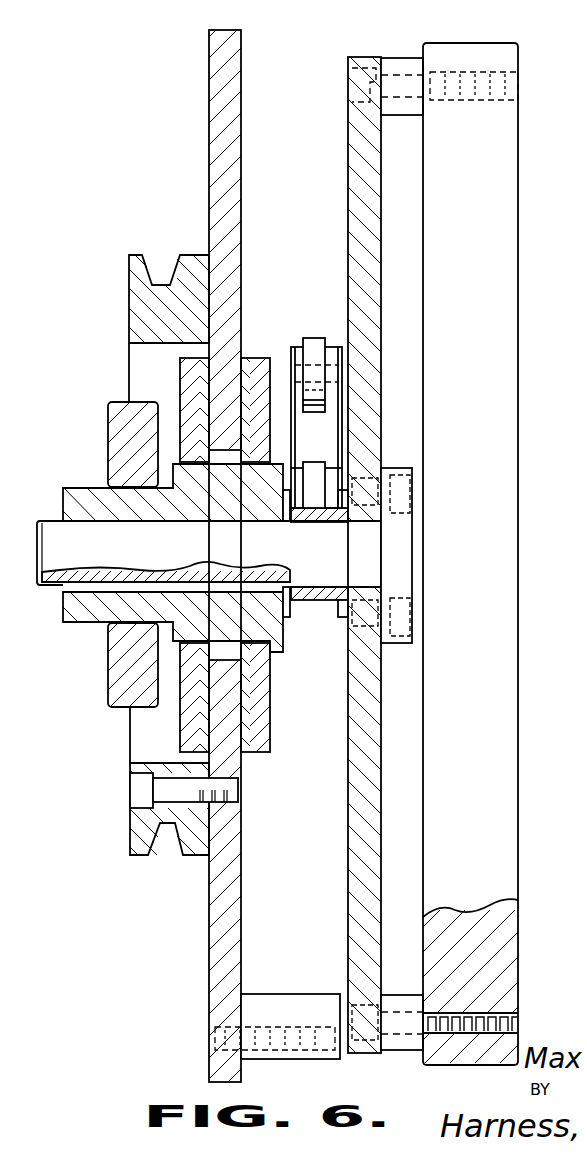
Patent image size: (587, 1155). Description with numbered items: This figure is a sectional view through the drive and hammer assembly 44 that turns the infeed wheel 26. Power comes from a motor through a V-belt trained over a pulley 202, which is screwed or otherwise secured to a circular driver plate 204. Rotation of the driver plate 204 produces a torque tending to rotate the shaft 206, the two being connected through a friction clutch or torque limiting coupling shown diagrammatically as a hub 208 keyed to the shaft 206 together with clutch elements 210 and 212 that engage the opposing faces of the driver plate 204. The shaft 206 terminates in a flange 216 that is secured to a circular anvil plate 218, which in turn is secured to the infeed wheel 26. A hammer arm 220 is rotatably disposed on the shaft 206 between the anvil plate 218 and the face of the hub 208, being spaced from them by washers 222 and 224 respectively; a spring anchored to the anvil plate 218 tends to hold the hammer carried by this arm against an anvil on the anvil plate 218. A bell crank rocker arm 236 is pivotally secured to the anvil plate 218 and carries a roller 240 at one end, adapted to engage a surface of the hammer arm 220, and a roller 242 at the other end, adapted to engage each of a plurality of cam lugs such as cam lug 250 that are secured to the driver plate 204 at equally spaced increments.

The drive assembly 44 is at (112, 51).
The infeed wheel 26 is at (490, 880).
The pulley 202 is at (130, 293).
The driver plate 204 is at (209, 127).
The shaft 206 is at (48, 530).
The hub 208 is at (90, 610).
The clutch element 210 is at (183, 376).
The clutch element 212 is at (263, 358).
The flange 216 is at (403, 548).
The anvil plate 218 is at (370, 335).
The hammer arm 220 is at (318, 547).
The washer 222 is at (351, 522).
The washer 224 is at (297, 618).
The bell crank rocker arm 236 is at (330, 432).
The roller 240 is at (320, 485).
The roller 242 is at (325, 320).
The cam lug 250 is at (267, 1000).